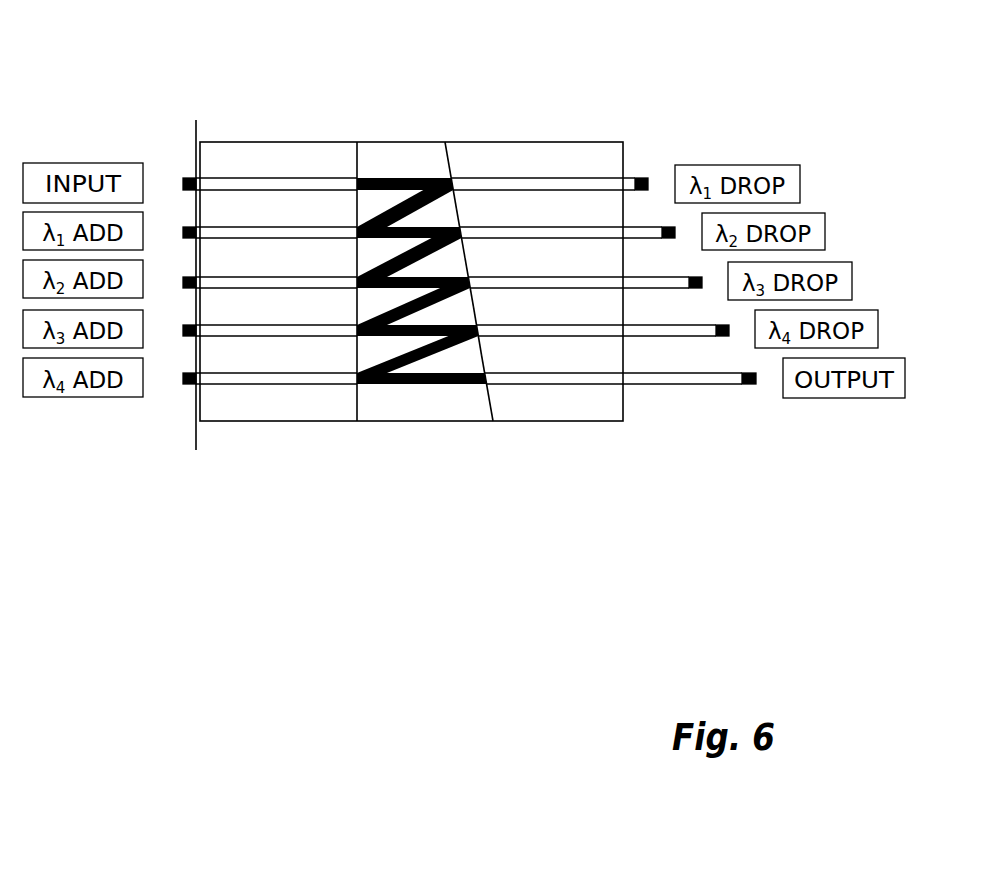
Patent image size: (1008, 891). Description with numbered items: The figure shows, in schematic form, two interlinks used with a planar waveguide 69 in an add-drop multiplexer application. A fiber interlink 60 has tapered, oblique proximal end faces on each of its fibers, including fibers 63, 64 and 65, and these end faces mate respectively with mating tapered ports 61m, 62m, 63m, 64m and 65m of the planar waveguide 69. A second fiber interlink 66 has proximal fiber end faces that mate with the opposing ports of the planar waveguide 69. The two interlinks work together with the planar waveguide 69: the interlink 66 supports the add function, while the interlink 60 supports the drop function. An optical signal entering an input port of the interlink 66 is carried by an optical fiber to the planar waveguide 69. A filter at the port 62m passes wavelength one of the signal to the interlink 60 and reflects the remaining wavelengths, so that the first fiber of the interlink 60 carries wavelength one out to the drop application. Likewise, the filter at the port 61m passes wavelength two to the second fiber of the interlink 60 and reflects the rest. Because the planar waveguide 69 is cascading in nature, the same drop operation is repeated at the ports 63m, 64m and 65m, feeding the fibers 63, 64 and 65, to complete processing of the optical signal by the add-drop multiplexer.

The fiber interlink 60 is at (555, 419).
The tapered port 61m is at (465, 232).
The tapered port 62m is at (455, 183).
The tapered port 63m is at (473, 282).
The tapered port 64m is at (483, 330).
The tapered port 65m is at (478, 388).
The fiber 63 is at (585, 282).
The fiber 64 is at (577, 332).
The fiber 65 is at (557, 380).
The fiber interlink 66 is at (243, 408).
The planar waveguide 69 is at (367, 257).